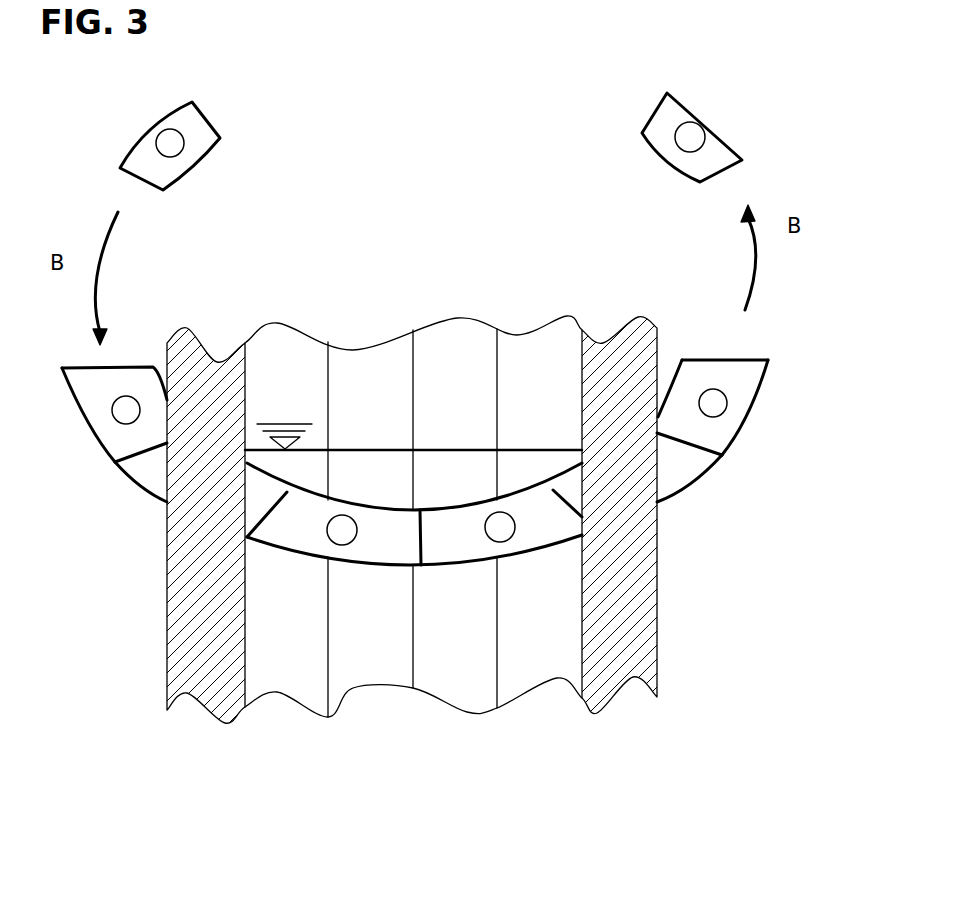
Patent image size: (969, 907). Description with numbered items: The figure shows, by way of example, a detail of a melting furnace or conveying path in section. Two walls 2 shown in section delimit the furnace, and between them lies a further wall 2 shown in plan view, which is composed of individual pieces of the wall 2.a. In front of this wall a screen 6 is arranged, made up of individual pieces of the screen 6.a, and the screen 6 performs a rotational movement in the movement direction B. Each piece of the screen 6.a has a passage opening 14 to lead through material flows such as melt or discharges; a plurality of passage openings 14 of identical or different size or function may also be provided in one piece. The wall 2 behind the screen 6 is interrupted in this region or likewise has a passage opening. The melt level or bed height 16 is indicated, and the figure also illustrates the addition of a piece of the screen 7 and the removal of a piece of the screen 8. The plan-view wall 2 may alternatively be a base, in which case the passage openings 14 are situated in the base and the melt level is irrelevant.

The delimiting wall 2 is at (452, 303).
The piece of the wall 2.a is at (282, 683).
The screen 6 is at (130, 490).
The piece of the screen 6.a is at (110, 385).
The added piece of the screen 7 is at (145, 168).
The removed piece of the screen 8 is at (668, 129).
The passage opening 14 is at (713, 405).
The melt level/bed height 16 is at (373, 449).